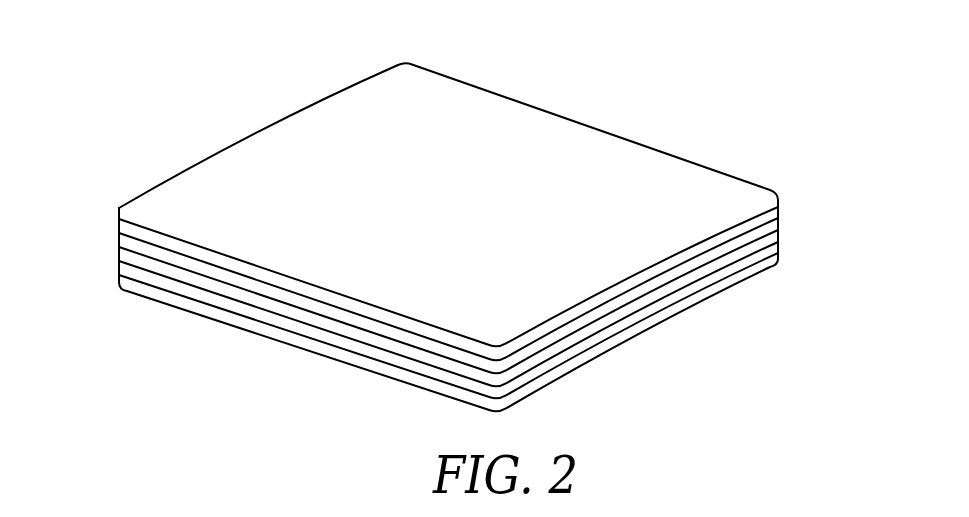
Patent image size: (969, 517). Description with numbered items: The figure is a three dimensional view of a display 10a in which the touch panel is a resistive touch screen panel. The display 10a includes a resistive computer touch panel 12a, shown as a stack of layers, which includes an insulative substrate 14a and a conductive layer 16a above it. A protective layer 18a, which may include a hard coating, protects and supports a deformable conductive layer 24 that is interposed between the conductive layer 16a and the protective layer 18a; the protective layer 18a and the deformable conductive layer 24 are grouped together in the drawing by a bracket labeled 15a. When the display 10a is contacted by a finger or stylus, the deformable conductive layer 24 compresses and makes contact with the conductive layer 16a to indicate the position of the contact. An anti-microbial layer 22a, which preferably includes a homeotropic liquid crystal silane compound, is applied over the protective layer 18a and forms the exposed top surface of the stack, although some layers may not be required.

The display 10a is at (500, 73).
The resistive computer touch panel 12a is at (107, 205).
The insulative substrate 14a is at (777, 267).
The sub-laminate of layers 18a and 24 15a is at (860, 175).
The conductive layer 16a is at (775, 253).
The protective layer 18a is at (772, 228).
The anti-microbial layer 22a is at (572, 142).
The deformable conductive layer 24 is at (772, 240).